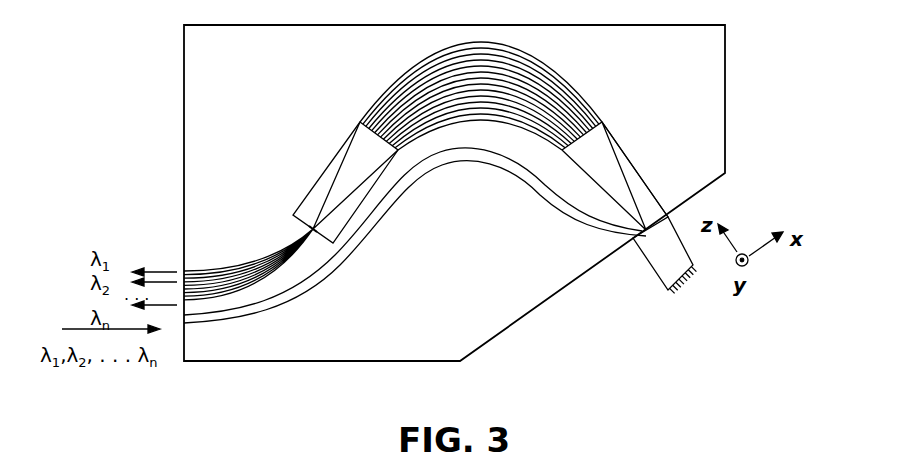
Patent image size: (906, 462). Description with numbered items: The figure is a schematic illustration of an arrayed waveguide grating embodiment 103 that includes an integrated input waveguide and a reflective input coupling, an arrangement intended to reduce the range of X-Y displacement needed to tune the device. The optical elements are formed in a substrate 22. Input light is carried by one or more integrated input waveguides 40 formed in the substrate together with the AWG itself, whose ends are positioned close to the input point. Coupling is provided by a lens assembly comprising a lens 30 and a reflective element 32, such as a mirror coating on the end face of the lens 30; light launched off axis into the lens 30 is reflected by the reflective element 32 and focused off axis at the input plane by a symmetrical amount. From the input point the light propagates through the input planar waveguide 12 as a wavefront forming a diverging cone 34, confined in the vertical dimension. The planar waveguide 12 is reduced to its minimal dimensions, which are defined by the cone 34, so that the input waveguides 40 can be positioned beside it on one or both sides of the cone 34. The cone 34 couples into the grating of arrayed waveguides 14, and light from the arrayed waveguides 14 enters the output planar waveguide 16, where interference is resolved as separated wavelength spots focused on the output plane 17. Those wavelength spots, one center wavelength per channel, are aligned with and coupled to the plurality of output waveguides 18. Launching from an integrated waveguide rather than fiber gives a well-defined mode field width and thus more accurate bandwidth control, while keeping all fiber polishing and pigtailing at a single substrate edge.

The embodiment of the invention 103 is at (742, 74).
The substrate 22 is at (690, 62).
The output planar waveguide 16 is at (318, 175).
The output plane 17 is at (297, 223).
The output waveguides 18 is at (238, 281).
The arrayed waveguides 14 is at (527, 76).
The diverging cone 34 is at (600, 148).
The input planar waveguide 12 is at (636, 163).
The integrated input waveguides 40 is at (263, 313).
The lens 30 is at (648, 252).
The reflective element 32 is at (672, 287).